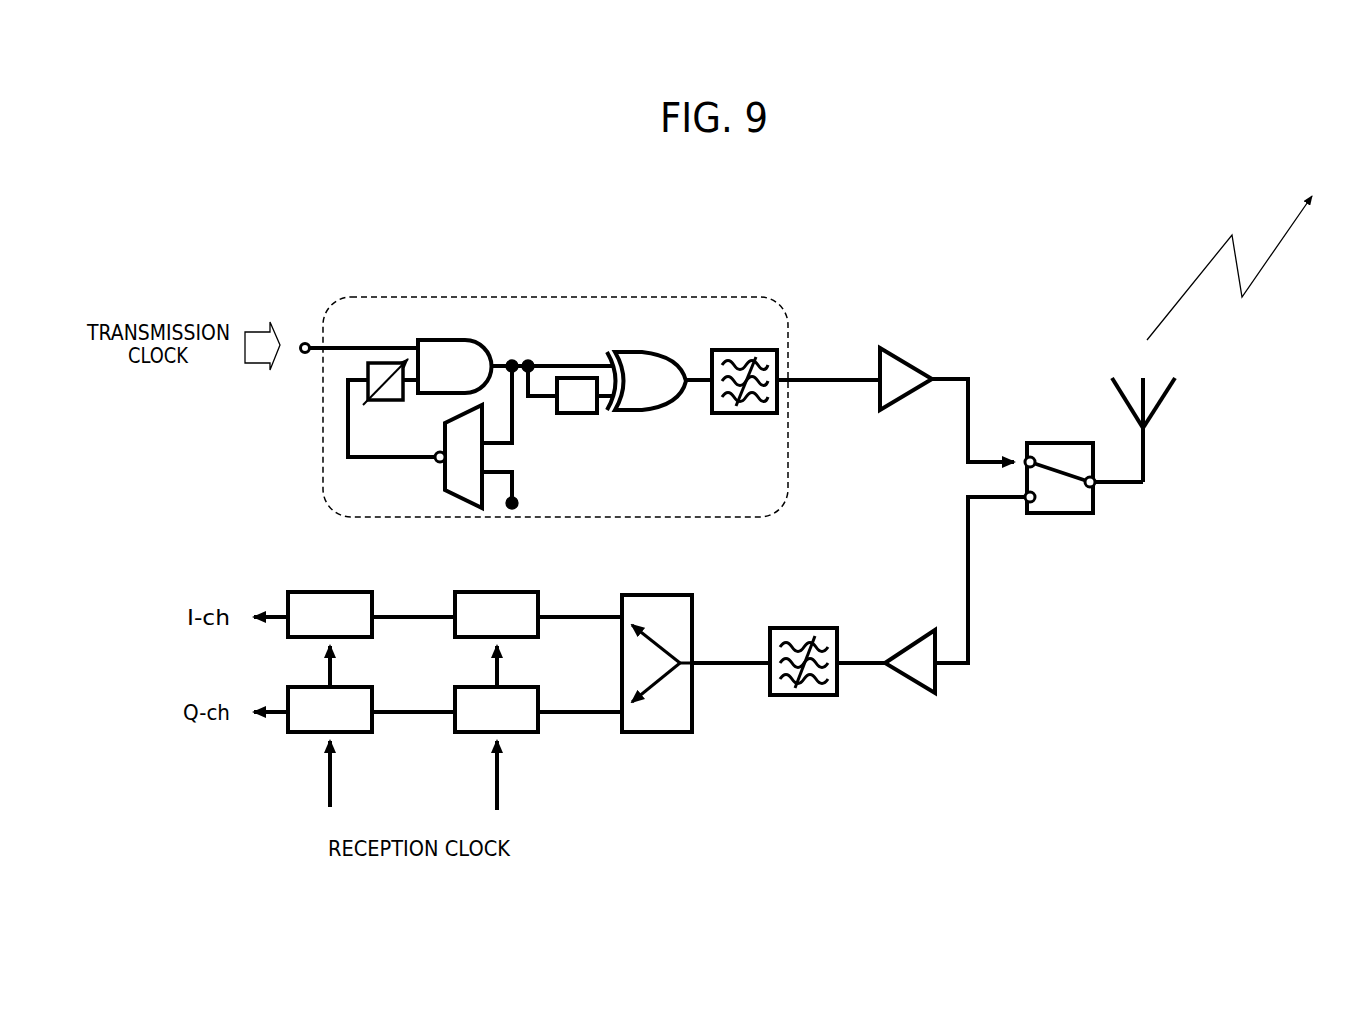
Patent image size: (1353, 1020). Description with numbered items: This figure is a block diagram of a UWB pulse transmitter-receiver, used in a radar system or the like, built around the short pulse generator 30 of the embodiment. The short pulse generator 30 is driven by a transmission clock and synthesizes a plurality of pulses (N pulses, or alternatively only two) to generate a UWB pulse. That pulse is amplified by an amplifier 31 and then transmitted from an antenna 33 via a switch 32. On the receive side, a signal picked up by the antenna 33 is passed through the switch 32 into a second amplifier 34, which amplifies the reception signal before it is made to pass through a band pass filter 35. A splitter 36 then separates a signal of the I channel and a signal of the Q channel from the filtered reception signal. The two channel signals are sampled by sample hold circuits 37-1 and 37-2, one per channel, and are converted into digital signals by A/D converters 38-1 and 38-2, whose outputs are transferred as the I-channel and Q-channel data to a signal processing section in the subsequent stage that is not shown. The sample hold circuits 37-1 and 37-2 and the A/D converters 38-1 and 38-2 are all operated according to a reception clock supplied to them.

The short pulse generator 30 is at (568, 297).
The amplifier 31 is at (905, 358).
The switch 32 is at (1070, 513).
The antenna 33 is at (1147, 452).
The amplifier 34 is at (920, 685).
The band pass filter 35 is at (795, 695).
The splitter 36 is at (655, 732).
The sample hold circuit 37-1 is at (513, 592).
The sample hold circuit 37-2 is at (527, 732).
The A/D converter 38-1 is at (350, 592).
The A/D converter 38-2 is at (358, 732).